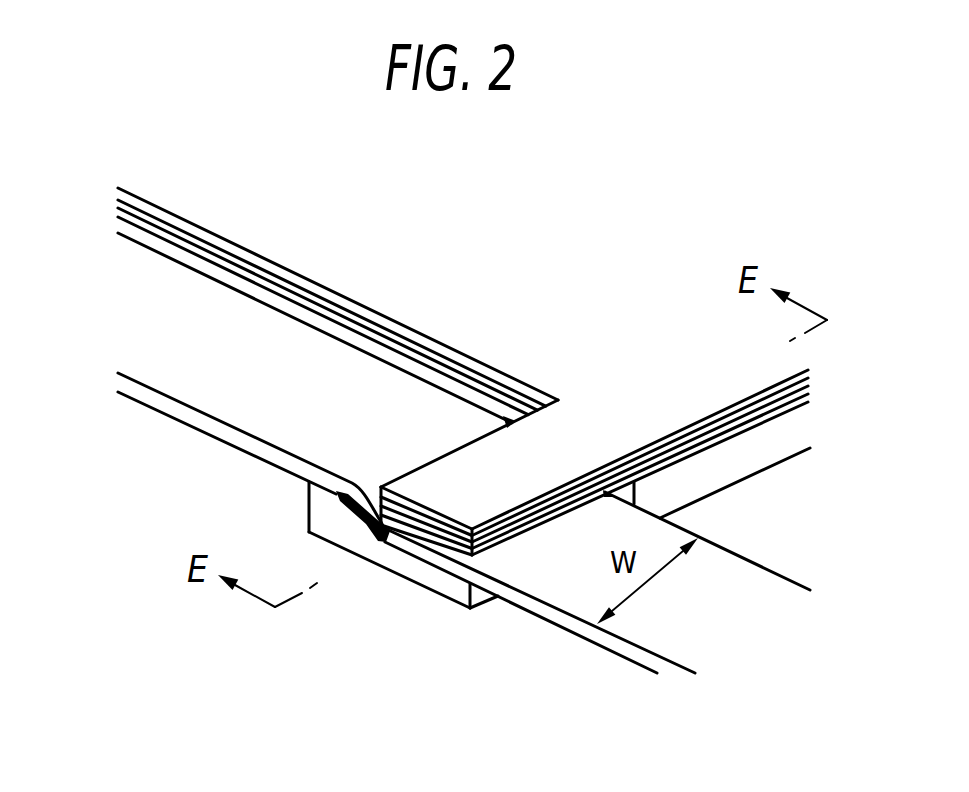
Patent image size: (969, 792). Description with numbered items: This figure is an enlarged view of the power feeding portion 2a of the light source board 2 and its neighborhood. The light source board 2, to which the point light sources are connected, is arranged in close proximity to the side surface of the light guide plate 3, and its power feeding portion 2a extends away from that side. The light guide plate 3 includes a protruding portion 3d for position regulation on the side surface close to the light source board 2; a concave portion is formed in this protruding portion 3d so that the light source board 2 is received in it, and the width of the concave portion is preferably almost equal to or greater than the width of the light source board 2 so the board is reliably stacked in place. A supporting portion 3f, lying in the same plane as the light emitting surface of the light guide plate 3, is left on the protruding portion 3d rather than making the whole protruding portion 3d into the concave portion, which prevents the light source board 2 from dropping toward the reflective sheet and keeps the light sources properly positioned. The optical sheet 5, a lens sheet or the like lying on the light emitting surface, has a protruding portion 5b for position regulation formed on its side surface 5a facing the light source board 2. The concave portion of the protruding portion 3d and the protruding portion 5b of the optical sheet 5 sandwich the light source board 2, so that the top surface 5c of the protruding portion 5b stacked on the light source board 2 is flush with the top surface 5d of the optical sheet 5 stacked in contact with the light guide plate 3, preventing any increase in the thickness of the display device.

The light source board 2 is at (186, 388).
The power feeding portion 2a is at (652, 628).
The light guide plate 3 is at (743, 481).
The protruding portion 3d is at (402, 561).
The supporting portion 3f is at (308, 514).
The optical sheet 5 is at (817, 365).
The side surface 5a is at (150, 215).
The protruding portion 5b is at (470, 517).
The top surface 5c is at (472, 468).
The top surface 5d is at (628, 372).